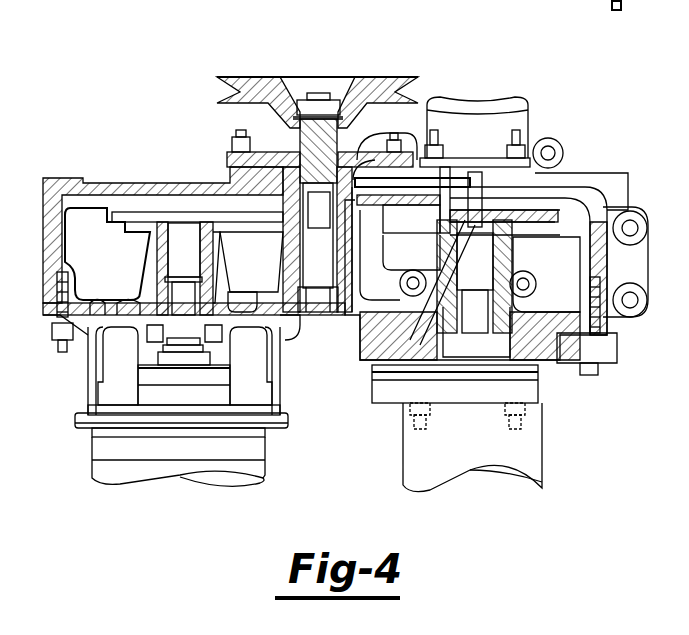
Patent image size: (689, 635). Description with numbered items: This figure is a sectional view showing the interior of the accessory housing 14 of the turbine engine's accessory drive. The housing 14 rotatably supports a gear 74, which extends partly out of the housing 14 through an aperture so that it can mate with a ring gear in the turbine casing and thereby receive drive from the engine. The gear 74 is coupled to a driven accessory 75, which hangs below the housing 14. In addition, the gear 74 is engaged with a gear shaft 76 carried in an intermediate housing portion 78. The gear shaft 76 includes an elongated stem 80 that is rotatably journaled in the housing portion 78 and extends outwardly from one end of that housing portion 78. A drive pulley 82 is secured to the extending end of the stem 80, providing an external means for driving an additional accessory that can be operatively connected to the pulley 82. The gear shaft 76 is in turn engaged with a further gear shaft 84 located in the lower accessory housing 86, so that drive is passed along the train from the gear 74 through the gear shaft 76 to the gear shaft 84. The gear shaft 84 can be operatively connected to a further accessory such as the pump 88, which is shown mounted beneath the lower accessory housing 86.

The accessory housing 14 is at (163, 160).
The gear 74 is at (110, 210).
The driven accessory 75 is at (100, 443).
The gear shaft 76 is at (255, 207).
The intermediate housing portion 78 is at (357, 147).
The elongated stem 80 is at (297, 137).
The drive pulley 82 is at (248, 77).
The gear shaft 84 is at (450, 227).
The lower accessory housing 86 is at (537, 190).
The pump 88 is at (513, 448).